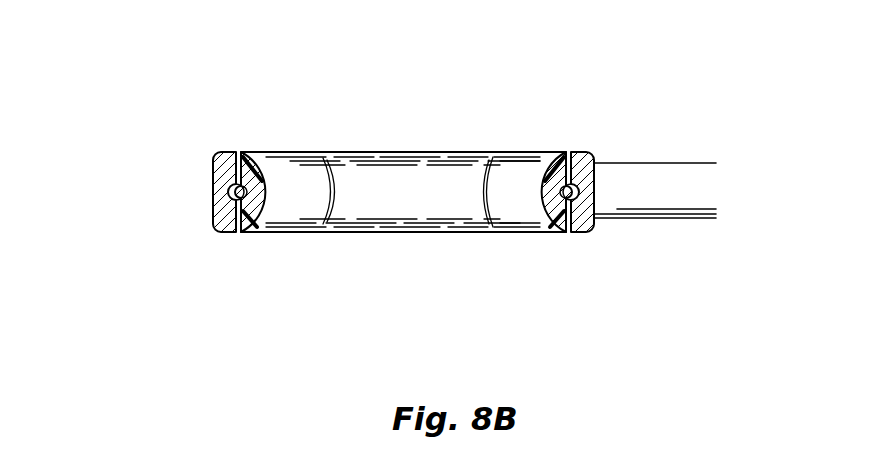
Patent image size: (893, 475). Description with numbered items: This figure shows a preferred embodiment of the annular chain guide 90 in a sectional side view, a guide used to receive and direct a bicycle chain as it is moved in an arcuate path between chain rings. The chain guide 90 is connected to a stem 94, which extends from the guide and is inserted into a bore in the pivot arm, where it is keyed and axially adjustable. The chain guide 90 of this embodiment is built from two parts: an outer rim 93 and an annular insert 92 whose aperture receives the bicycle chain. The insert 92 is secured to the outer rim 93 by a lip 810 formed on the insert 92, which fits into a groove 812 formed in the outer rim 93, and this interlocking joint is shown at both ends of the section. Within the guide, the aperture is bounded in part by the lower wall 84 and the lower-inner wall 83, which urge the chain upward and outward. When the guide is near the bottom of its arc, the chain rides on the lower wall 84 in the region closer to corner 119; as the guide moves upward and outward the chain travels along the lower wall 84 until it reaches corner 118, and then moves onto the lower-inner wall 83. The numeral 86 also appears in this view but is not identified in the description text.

The annular chain guide 90 is at (480, 277).
The outer tube 86 is at (300, 183).
The lower wall 84 is at (402, 195).
The lower-inner wall 83 is at (517, 178).
The corner 118 is at (487, 193).
The corner 119 is at (327, 207).
The outer rim 93 is at (224, 221).
The annular insert 92 is at (262, 222).
The lip 810 is at (248, 163).
The groove 812 is at (229, 186).
The stem 94 is at (663, 180).